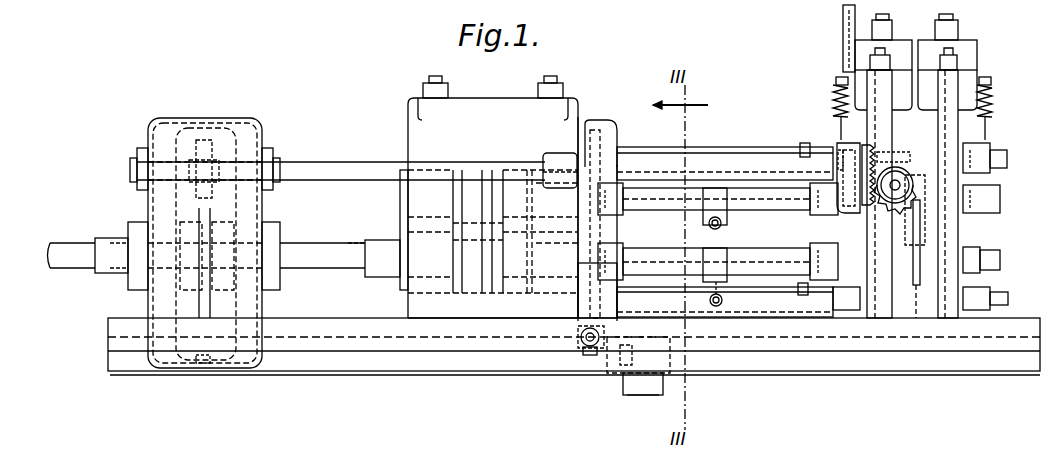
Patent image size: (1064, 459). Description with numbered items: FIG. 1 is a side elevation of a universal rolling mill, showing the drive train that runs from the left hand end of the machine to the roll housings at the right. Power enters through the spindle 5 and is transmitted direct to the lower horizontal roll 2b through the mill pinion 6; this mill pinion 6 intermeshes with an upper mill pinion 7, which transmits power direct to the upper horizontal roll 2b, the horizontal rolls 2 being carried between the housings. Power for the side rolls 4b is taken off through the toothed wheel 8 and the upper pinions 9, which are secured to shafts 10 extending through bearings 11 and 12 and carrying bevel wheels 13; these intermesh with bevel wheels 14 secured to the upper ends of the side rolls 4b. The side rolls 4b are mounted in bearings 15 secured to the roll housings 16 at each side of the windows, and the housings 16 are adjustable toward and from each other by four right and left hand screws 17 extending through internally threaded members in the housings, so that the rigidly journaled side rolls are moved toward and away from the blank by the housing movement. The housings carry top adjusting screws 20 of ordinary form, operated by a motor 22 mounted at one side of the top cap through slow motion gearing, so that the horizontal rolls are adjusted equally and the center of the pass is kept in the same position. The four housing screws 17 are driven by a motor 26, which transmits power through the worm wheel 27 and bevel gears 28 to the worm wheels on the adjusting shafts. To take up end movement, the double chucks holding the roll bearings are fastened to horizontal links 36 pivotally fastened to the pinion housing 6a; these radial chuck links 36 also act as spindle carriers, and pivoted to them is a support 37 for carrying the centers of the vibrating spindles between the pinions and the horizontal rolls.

The horizontal rolls 2 is at (930, 195).
The lower horizontal roll 2b is at (913, 285).
The side rolls 4b is at (972, 232).
The spindle 5 is at (78, 262).
The mill pinion 6 is at (468, 284).
The pinion housing 6a is at (493, 222).
The upper mill pinion 7 is at (472, 185).
The toothed wheel 8 is at (204, 362).
The upper pinions 9 is at (206, 150).
The shafts 10 is at (341, 172).
The bearing 11 is at (553, 165).
The bearing 12 is at (840, 150).
The bevel wheels 13 is at (883, 140).
The bevel wheels 14 is at (895, 180).
The bearings 15 is at (963, 235).
The roll housings 16 is at (880, 131).
The right and left hand screws 17 is at (768, 158).
The top adjusting screw 20 is at (942, 36).
The motor 22 is at (888, 32).
The motor 26 is at (627, 360).
The worm wheel 27 is at (589, 356).
The bevel gears 28 is at (580, 328).
The horizontal links 36 is at (732, 157).
The support 37 is at (722, 207).